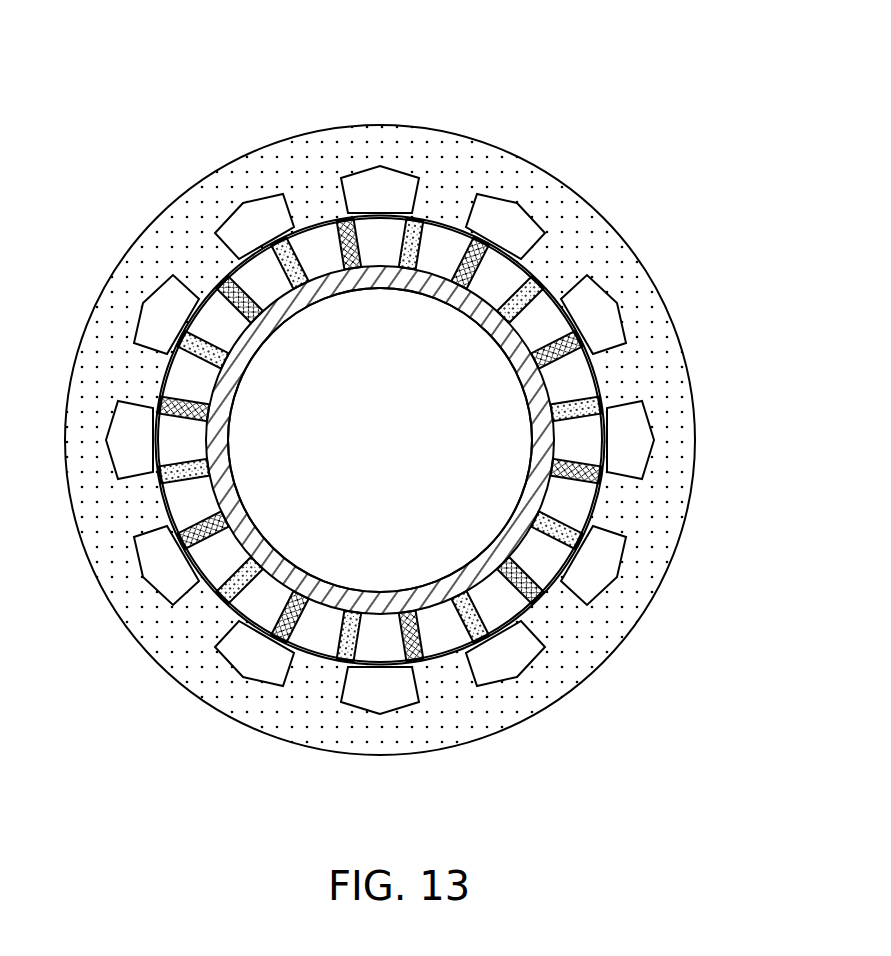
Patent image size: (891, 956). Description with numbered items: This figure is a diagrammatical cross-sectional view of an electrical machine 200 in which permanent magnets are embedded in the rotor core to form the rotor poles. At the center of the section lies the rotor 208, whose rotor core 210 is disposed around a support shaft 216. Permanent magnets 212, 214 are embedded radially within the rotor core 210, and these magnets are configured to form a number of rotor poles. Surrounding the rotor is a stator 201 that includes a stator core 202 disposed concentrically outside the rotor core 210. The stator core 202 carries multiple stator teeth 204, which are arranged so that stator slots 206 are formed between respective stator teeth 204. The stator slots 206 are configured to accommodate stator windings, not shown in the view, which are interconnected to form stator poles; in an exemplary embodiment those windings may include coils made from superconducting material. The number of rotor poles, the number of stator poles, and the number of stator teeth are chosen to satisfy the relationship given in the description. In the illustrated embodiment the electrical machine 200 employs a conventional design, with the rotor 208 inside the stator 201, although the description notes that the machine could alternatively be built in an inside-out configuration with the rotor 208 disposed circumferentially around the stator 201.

The electrical machine 200 is at (745, 80).
The stator 201 is at (694, 389).
The stator core 202 is at (513, 175).
The stator teeth 204 is at (550, 263).
The stator slots 206 is at (605, 322).
The rotor 208 is at (525, 545).
The rotor core 210 is at (587, 442).
The permanent magnet 212 is at (540, 595).
The permanent magnet 214 is at (487, 633).
The support shaft 216 is at (537, 495).